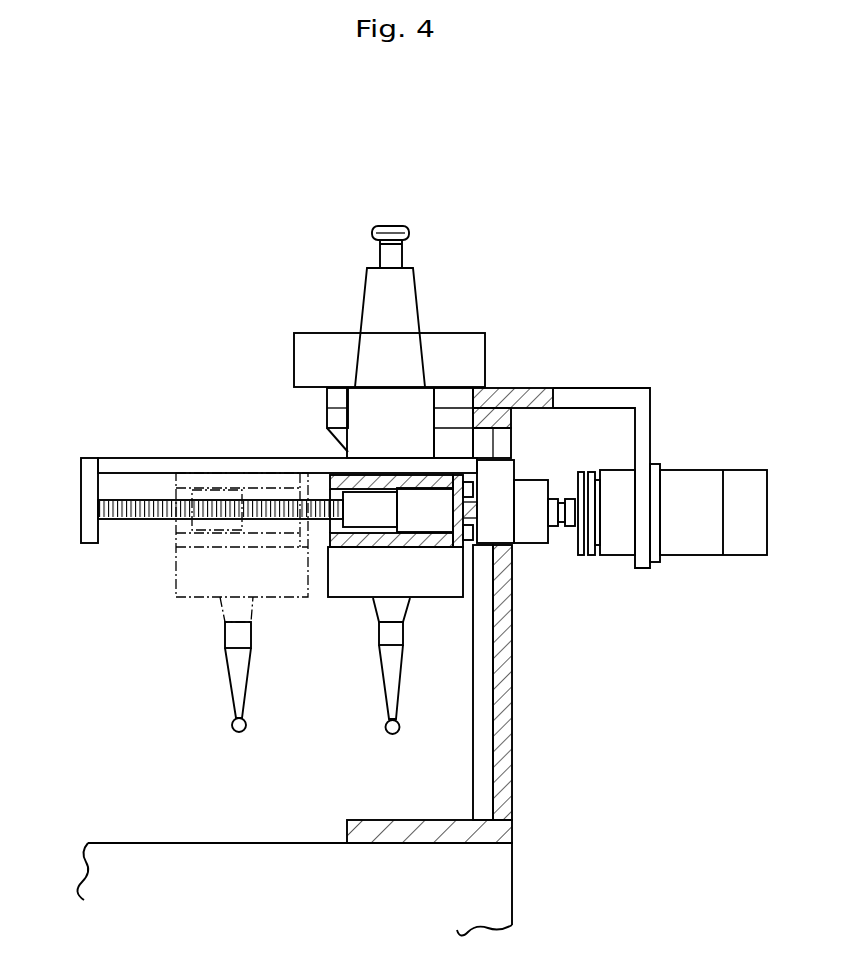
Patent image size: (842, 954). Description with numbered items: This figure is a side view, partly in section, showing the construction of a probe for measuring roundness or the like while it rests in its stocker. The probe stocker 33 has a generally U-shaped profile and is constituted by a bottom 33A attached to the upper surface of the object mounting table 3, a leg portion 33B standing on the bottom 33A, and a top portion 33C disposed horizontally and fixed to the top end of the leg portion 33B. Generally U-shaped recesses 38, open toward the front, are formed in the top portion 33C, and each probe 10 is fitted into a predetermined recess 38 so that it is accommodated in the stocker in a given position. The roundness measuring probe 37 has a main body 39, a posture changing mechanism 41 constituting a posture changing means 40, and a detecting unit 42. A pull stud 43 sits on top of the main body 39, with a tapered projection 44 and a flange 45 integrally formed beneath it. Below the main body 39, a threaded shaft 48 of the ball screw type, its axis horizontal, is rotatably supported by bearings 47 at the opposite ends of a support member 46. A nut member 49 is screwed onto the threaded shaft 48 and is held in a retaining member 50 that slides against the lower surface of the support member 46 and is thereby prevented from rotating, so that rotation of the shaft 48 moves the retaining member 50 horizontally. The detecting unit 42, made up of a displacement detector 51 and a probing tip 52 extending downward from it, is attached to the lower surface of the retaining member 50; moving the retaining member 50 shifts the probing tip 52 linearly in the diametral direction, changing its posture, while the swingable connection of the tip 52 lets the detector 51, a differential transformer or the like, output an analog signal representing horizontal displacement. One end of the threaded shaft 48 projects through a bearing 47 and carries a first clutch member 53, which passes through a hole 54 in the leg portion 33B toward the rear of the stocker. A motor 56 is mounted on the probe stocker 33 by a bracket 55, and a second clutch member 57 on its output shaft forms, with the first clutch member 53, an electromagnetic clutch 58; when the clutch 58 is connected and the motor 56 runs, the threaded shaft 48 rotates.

The object mounting table 3 is at (130, 842).
The probe 10 is at (318, 313).
The probe stocker 33 is at (512, 765).
The bottom 33A is at (402, 843).
The leg portion 33B is at (512, 658).
The top portion 33C is at (508, 388).
The roundness measuring probe 37 is at (415, 300).
The recess 38 is at (327, 418).
The main body 39 is at (413, 400).
The posture changing means 40 is at (470, 517).
The posture changing mechanism 41 is at (447, 545).
The detecting unit 42 is at (350, 598).
The pull stud 43 is at (389, 226).
The tapered projection 44 is at (363, 300).
The flange 45 is at (297, 348).
The support member 46 is at (143, 458).
The bearing 47 is at (80, 490).
The threaded shaft 48 is at (148, 520).
The nut member 49 is at (350, 490).
The retaining member 50 is at (432, 477).
The displacement detector 51 is at (433, 598).
The probing tip 52 is at (396, 702).
The first clutch member 53 is at (580, 472).
The hole 54 is at (502, 608).
The bracket 55 is at (625, 388).
The motor 56 is at (690, 470).
The second clutch member 57 is at (594, 472).
The electromagnetic clutch 58 is at (612, 438).